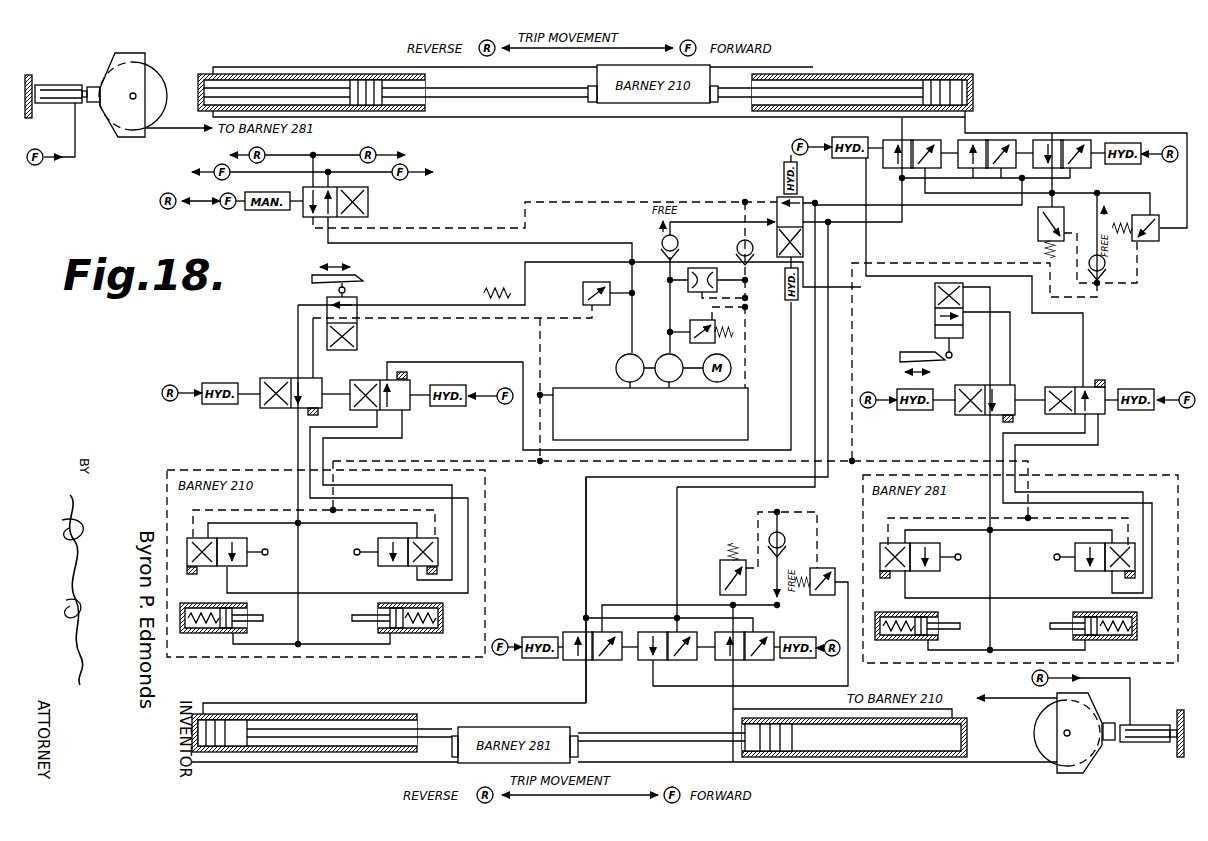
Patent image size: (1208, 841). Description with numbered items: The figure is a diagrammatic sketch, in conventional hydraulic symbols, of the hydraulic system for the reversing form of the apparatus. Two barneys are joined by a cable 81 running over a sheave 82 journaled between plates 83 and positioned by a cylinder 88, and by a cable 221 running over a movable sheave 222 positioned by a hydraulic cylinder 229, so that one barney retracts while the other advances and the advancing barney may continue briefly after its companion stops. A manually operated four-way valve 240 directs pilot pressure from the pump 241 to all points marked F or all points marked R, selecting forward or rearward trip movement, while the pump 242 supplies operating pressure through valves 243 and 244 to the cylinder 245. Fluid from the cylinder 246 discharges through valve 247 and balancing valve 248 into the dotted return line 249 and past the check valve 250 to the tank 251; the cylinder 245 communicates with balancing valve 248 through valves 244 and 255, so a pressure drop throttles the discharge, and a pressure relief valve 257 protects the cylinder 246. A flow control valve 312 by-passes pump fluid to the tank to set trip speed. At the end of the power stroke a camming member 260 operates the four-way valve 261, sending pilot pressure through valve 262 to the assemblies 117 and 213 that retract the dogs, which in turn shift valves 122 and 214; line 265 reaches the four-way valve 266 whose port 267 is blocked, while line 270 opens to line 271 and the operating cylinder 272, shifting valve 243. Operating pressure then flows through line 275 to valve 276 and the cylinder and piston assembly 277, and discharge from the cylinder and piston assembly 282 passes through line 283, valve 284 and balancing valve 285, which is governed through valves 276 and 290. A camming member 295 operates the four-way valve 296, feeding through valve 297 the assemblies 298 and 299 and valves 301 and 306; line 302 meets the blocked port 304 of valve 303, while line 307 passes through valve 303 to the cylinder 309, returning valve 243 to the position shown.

The hydraulic cylinder 229 is at (55, 85).
The movable sheave 222 is at (158, 73).
The cable 221 is at (222, 67).
The cylinder 245 is at (282, 74).
The cable 81 is at (800, 67).
The cylinder 246 is at (870, 76).
The valve 255 is at (1003, 140).
The valve 247 is at (1078, 140).
The hydraulically operated cylinder 309 is at (784, 168).
The hydraulically operated valve 243 is at (778, 213).
The valve 244 is at (890, 170).
The manually operated four-way valve 240 is at (368, 200).
The check valve 250 is at (737, 248).
The dotted return line 249 is at (908, 265).
The pressure relief valve 257 is at (1038, 234).
The balancing valve 248 is at (1152, 242).
The camming member 260 is at (365, 278).
The four-way valve 261 is at (358, 333).
The valve 262 is at (278, 378).
The four-way valve 266 is at (380, 385).
The port 267 is at (405, 372).
The line 271 is at (472, 362).
The pump 241 is at (616, 369).
The pump 242 is at (663, 355).
The manually operated flow control valve 312 is at (697, 294).
The tank 251 is at (748, 398).
The operating cylinder 272 is at (793, 310).
The camming member 295 is at (920, 352).
The four-way valve 296 is at (962, 340).
The hydraulically operated valve 303 is at (1070, 387).
The port 304 is at (1104, 382).
The valve 297 is at (966, 416).
The line 270 is at (455, 513).
The line 265 is at (470, 537).
The four-way valve 122 is at (232, 568).
The four-way valve 214 is at (392, 568).
The cylinder, piston and spring assembly 117 is at (207, 634).
The cylinder, piston and spring assembly 213 is at (428, 634).
The line 275 is at (588, 557).
The balancing valve 285 is at (822, 568).
The line 307 is at (1067, 503).
The line 302 is at (1128, 492).
The valve 301 is at (920, 571).
The valve 306 is at (1088, 571).
The cylinder and piston assembly 298 is at (898, 641).
The cylinder and piston assembly 299 is at (1120, 641).
The valve 276 is at (610, 662).
The valve 290 is at (650, 662).
The line 283 is at (732, 697).
The valve 284 is at (760, 662).
The cylinder and piston assembly 277 is at (290, 753).
The cylinder and piston assembly 282 is at (868, 758).
The sheave 82 is at (1034, 729).
The plates 83 is at (1073, 773).
The cylinder 88 is at (1145, 743).